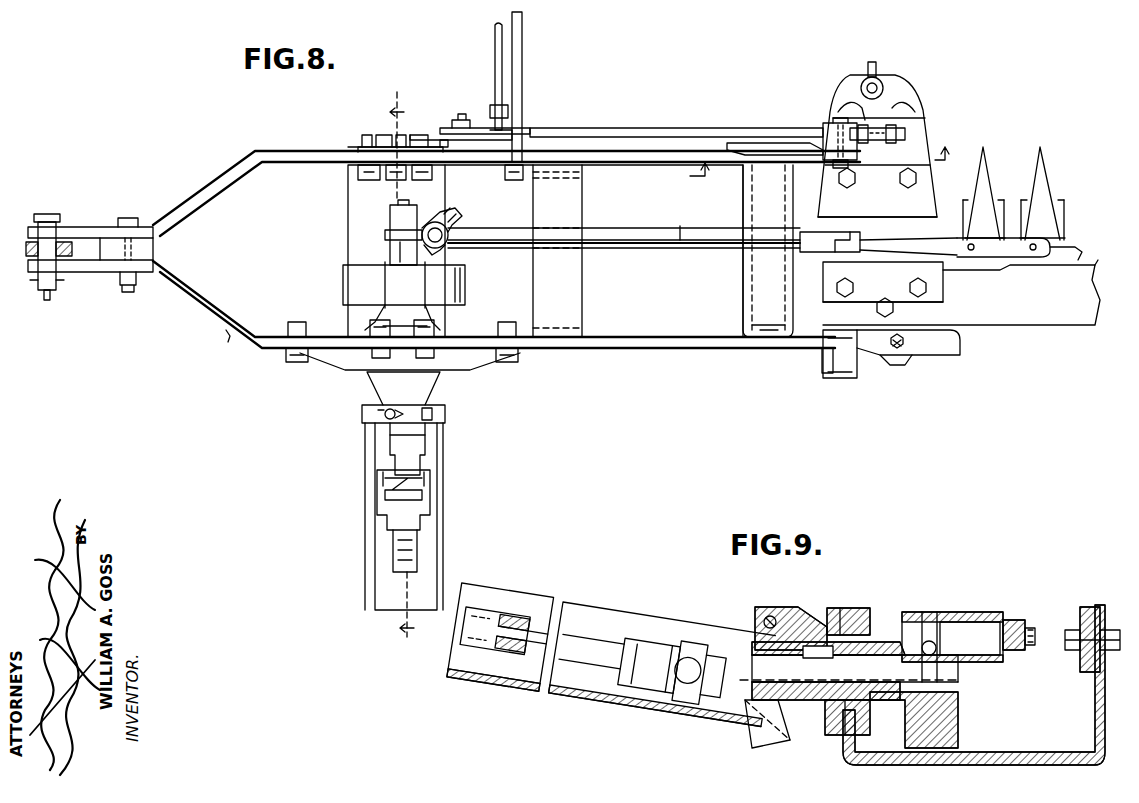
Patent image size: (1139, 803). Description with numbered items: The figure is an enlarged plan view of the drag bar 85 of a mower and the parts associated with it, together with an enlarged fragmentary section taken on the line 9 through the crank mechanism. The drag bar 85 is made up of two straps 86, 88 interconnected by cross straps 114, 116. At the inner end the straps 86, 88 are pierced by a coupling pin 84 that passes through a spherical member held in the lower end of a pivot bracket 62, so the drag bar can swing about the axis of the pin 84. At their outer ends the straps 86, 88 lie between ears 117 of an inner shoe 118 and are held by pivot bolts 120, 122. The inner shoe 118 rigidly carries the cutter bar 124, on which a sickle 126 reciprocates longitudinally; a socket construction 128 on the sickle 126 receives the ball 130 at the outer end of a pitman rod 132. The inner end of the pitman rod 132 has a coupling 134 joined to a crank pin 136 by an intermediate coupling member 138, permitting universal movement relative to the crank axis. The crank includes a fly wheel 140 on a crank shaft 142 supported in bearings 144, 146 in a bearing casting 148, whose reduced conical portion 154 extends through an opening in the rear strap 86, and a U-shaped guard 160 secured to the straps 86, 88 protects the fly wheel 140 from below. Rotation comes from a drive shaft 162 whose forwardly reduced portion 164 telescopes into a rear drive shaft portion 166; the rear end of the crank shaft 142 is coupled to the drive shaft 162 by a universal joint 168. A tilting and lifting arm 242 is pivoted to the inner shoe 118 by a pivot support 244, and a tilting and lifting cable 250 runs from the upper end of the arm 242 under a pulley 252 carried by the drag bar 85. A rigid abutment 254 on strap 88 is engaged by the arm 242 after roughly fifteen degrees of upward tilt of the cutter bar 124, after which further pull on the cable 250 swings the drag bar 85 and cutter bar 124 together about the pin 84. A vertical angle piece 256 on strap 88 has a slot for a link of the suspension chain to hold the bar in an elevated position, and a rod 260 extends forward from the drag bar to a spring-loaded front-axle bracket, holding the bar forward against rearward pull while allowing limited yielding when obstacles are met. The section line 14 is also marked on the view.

In FIG. 8, the section line 9 is at (397, 135).
In FIG. 8, the section line 14- 14 is at (820, 167).
In FIG. 8, the pivot bracket 62 is at (78, 246).
In FIG. 8, the coupling pin 84 is at (48, 212).
In FIG. 8, the drag bar 85 is at (222, 328).
In FIG. 8, the rear drag bar strap 86 is at (244, 322).
In FIG. 9, the rear drag bar strap 86 is at (858, 608).
In FIG. 8, the drag bar strap 88 is at (306, 162).
In FIG. 9, the drag bar strap 88 is at (1088, 607).
In FIG. 8, the cross strap 114 is at (582, 303).
In FIG. 8, the cross strap 116 is at (745, 297).
In FIG. 8, the ears 117 is at (820, 128).
In FIG. 8, the inner shoe 118 is at (926, 116).
In FIG. 8, the pivot bolt 120 is at (848, 380).
In FIG. 8, the pivot bolt 122 is at (830, 112).
In FIG. 8, the cutter bar 124 is at (1055, 325).
In FIG. 8, the sickle 126 is at (1033, 247).
In FIG. 8, the socket construction 128 is at (883, 289).
In FIG. 8, the ball 130 is at (830, 248).
In FIG. 8, the pitman rod 132 is at (624, 223).
In FIG. 8, the coupling 134 is at (448, 255).
In FIG. 9, the crank pin 136 is at (962, 630).
In FIG. 8, the intermediate coupling member 138 is at (395, 222).
In FIG. 9, the intermediate coupling member 138 is at (1010, 620).
In FIG. 8, the fly wheel 140 is at (352, 288).
In FIG. 9, the fly wheel 140 is at (960, 740).
In FIG. 9, the crank shaft 142 is at (818, 690).
In FIG. 9, the bearing 144 is at (872, 700).
In FIG. 9, the bearing 146 is at (780, 700).
In FIG. 9, the bearing casting 148 is at (808, 618).
In FIG. 9, the reduced conical portion 154 is at (892, 640).
In FIG. 9, the U-shaped guard 160 is at (1050, 752).
In FIG. 8, the drive shaft 162 is at (427, 563).
In FIG. 9, the drive shaft 162 is at (661, 637).
In FIG. 9, the forwardly reduced portion 164 is at (662, 664).
In FIG. 9, the rear drive shaft portion 166 is at (505, 613).
In FIG. 8, the universal joint 168 is at (380, 508).
In FIG. 9, the universal joint 168 is at (702, 633).
In FIG. 8, the tilting and lifting arm 242 is at (898, 128).
In FIG. 8, the pivot support 244 is at (886, 162).
In FIG. 8, the tilting and lifting cable 250 is at (646, 128).
In FIG. 8, the pulley 252 is at (436, 140).
In FIG. 8, the rigid abutment 254 is at (775, 143).
In FIG. 8, the angle piece 256 is at (510, 100).
In FIG. 8, the rod 260 is at (496, 40).